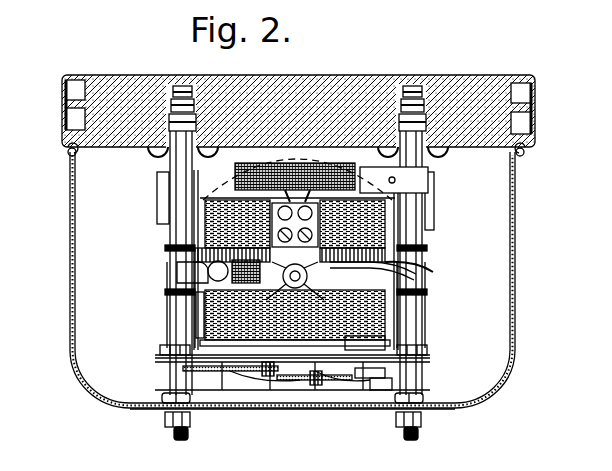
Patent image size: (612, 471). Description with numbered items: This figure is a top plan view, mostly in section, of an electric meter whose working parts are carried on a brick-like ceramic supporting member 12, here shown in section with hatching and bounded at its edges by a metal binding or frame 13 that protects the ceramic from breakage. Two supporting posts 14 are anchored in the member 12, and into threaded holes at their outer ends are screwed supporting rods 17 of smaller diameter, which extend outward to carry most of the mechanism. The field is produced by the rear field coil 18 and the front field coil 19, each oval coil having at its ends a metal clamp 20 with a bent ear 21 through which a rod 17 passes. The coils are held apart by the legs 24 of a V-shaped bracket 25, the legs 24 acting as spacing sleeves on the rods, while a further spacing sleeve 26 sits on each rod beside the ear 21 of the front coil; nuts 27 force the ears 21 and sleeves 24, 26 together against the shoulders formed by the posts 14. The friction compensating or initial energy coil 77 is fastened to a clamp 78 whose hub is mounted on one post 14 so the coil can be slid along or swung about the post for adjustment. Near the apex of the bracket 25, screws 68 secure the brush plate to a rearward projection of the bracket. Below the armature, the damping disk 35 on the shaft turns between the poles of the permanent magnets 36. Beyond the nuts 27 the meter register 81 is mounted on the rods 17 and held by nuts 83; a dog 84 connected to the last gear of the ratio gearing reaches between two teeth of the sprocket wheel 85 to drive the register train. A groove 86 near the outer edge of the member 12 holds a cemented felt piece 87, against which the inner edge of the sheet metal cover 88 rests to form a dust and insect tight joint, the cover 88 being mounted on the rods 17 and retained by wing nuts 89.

The ceramic supporting member 12 is at (148, 77).
The metal binding or frame 13 is at (540, 120).
The supporting posts 14 is at (172, 163).
The supporting rods 17 is at (188, 434).
The rear field coil 18 is at (387, 232).
The front field coil 19 is at (196, 326).
The metal clamp 20 is at (180, 213).
The ear 21 is at (168, 248).
The legs 24 is at (175, 273).
The V-shaped bracket 25 is at (432, 263).
The spacing sleeve 26 is at (172, 333).
The nuts 27 is at (160, 350).
The damping disk 35 is at (258, 380).
The permanent magnets 36 is at (157, 198).
The screws 68 is at (290, 251).
The initial energy coil 77 is at (297, 175).
The clamp 78 is at (429, 183).
The meter register 81 is at (330, 392).
The nuts 83 is at (162, 398).
The dog 84 is at (345, 345).
The sprocket wheel 85 is at (373, 381).
The groove 86 is at (68, 150).
The felt piece 87 is at (80, 156).
The sheet metal cover 88 is at (352, 412).
The wing nuts 89 is at (165, 420).